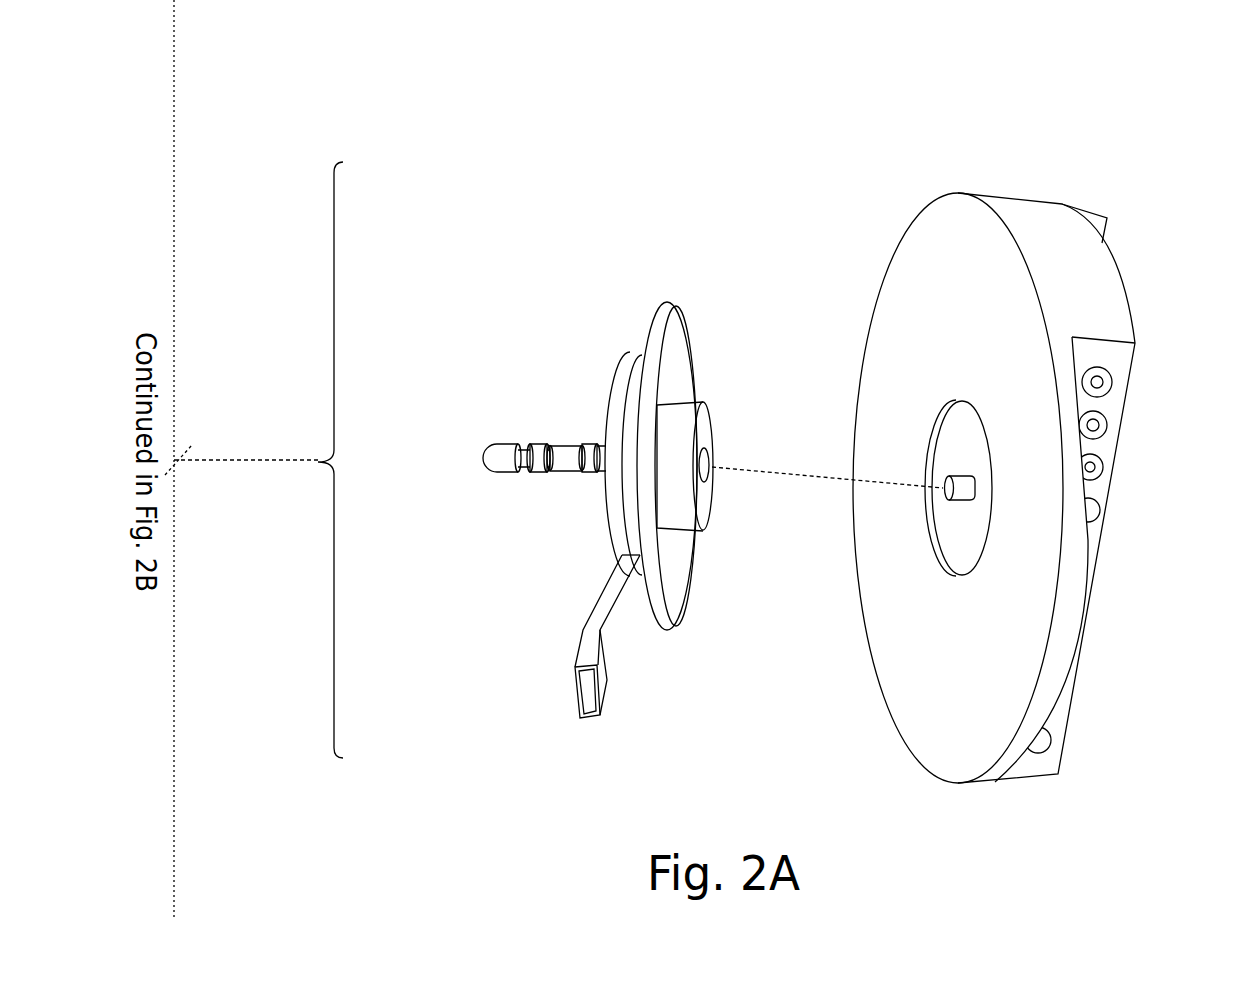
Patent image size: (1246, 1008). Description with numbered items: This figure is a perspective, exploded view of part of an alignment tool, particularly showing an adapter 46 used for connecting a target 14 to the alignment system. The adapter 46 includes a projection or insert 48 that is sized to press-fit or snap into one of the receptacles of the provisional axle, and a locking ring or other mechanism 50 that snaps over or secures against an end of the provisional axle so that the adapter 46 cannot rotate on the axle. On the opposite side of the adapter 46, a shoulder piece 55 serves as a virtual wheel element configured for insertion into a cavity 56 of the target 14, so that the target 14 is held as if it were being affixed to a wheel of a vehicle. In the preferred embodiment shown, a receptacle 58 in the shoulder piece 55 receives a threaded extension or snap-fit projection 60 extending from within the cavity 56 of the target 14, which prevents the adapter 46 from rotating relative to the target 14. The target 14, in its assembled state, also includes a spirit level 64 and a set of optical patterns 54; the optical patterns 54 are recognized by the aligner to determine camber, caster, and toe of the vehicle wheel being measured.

The target 14 is at (979, 160).
The adapter 46 is at (581, 295).
The projection or insert 48 is at (495, 473).
The locking ring 50 is at (605, 410).
The optical patterns 54 is at (1102, 385).
The shoulder piece 55 is at (690, 530).
The cavity 56 is at (938, 420).
The receptacle 58 is at (708, 452).
The threaded extension or snap-fit projection 60 is at (963, 482).
The spirit level 64 is at (602, 696).